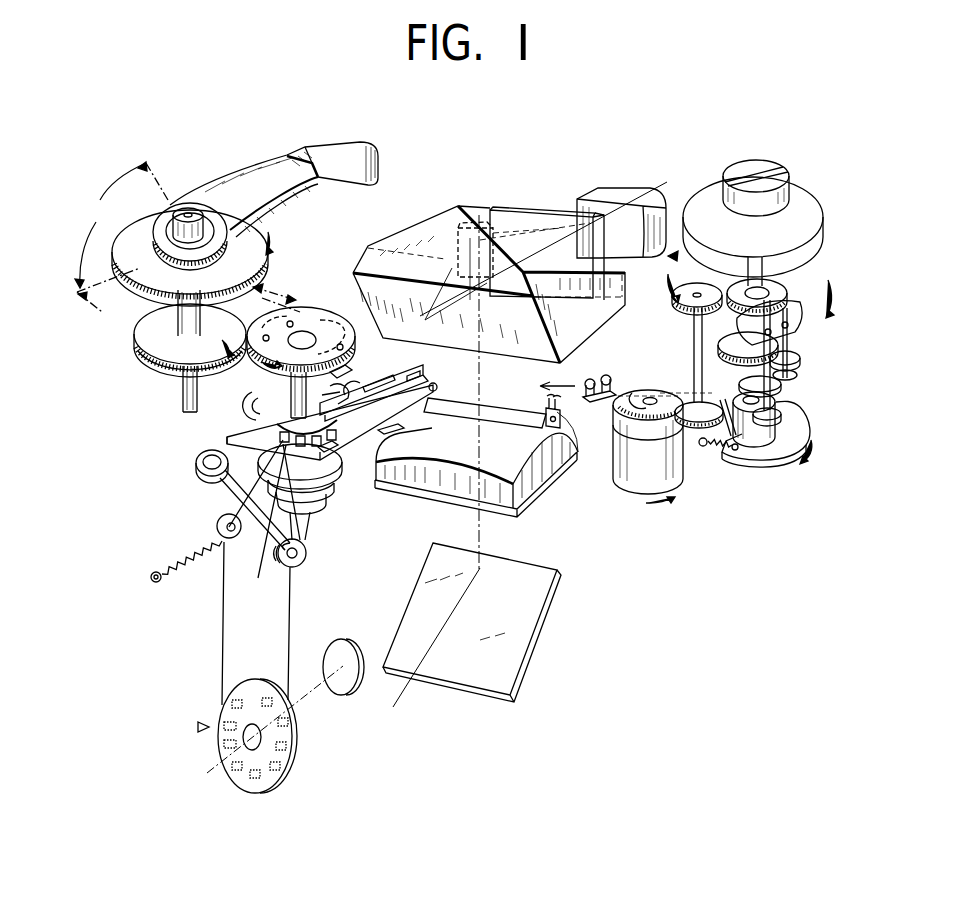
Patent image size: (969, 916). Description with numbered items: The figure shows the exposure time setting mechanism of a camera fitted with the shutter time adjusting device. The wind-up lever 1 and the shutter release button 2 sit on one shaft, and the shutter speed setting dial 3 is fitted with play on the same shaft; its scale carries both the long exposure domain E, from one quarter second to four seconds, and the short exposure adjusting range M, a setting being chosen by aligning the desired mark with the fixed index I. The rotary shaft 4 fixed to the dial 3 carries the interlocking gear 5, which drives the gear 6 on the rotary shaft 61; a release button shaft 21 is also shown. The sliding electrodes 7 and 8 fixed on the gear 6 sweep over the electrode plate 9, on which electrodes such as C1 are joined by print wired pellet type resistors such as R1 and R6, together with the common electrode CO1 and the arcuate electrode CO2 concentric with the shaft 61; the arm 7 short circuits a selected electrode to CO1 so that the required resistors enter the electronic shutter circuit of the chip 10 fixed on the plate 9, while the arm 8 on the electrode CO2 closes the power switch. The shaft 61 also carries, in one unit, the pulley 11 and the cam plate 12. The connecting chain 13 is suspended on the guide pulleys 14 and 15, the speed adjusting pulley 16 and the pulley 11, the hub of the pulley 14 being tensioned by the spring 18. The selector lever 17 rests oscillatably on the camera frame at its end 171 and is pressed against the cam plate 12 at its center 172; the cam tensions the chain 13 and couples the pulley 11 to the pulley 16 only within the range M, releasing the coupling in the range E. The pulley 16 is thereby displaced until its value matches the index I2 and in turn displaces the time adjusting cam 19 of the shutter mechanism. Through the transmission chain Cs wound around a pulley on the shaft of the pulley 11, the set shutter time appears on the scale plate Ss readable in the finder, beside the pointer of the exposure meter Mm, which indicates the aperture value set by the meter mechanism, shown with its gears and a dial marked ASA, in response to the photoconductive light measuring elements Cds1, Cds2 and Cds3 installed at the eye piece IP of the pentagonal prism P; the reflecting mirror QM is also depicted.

The wind-up lever 1 is at (236, 177).
The shutter release button 2 is at (192, 211).
The shutter speed setting dial 3 is at (114, 250).
The long exposure time domain E is at (121, 237).
The fixed index mark I is at (276, 272).
The adjusting range M is at (189, 321).
The rotary shaft 4 is at (178, 335).
The interlocking gear 5 is at (160, 364).
The release button shaft 21 is at (182, 406).
The gear 6 is at (300, 324).
The sliding electrode 8 is at (340, 334).
The sliding electrode 7 is at (262, 378).
The arcuate electrode CO2 is at (276, 415).
The electrode C1 is at (236, 432).
The chip providing the electronic shutter IC circuit 10 is at (395, 376).
The resistor R6 is at (362, 400).
The electrode plate 9 is at (328, 466).
The pulley 11 is at (324, 500).
The cam plate 12 is at (304, 514).
The rotary shaft 61 is at (335, 442).
The end of selector lever 171 is at (200, 474).
The selector lever 17 is at (240, 476).
The guide pulley 14 is at (228, 540).
The pellet type resistor R1 is at (240, 528).
The spring 18 is at (190, 556).
The center of selector lever 172 is at (284, 548).
The guide pulley 15 is at (298, 558).
The connecting chain 13 is at (292, 606).
The speed adjusting pulley 16 is at (290, 778).
The time adjusting cam 19 is at (344, 640).
The index I2 is at (203, 721).
The pentaprism P is at (582, 316).
The photoconductive light measuring element Cds1 is at (522, 208).
The photoconductive light measuring element Cds2 is at (598, 222).
The photoconductive light measuring element Cds3 is at (480, 226).
The eyepiece IP is at (626, 188).
The transmission chain Cs is at (470, 405).
The scale plate Ss is at (613, 454).
The common electrode CO1 is at (380, 430).
The reflecting mirror QM is at (512, 650).
The exposure meter Mm is at (672, 468).
The film speed dial ASA is at (751, 239).
The gear train gears is at (736, 373).